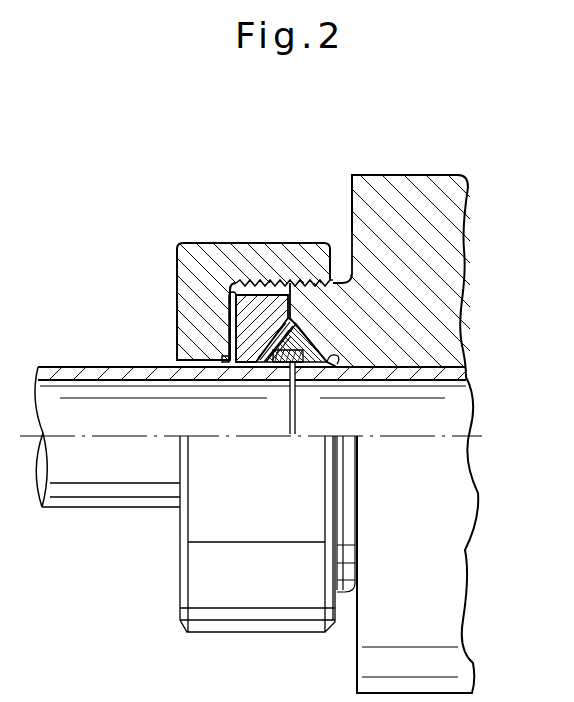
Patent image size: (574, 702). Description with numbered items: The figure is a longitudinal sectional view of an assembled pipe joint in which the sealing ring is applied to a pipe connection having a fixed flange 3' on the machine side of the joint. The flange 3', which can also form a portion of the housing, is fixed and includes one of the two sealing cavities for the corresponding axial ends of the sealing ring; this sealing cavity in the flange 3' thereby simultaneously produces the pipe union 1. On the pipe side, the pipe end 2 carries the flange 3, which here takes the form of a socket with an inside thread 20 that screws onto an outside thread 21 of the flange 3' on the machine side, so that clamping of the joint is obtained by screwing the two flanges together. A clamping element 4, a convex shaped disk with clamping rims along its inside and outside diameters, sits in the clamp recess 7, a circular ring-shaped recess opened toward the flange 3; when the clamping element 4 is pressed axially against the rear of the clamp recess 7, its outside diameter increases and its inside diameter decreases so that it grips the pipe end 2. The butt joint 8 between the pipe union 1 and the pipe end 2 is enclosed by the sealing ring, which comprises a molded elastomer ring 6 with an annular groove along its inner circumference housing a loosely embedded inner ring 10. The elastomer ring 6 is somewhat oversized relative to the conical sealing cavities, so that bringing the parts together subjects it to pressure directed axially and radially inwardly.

The pipe end 1 is at (315, 372).
The pipe end 2 is at (72, 500).
The flange 3 is at (246, 435).
The fixed flange 3' is at (335, 434).
The clamping element 4 is at (228, 323).
The molded elastomer ring 6 is at (262, 362).
The clamp recess 7 is at (225, 354).
The butt joint 8 is at (291, 372).
The inner ring 10 is at (335, 350).
The inside thread 20 is at (252, 280).
The outside thread 21 is at (342, 272).